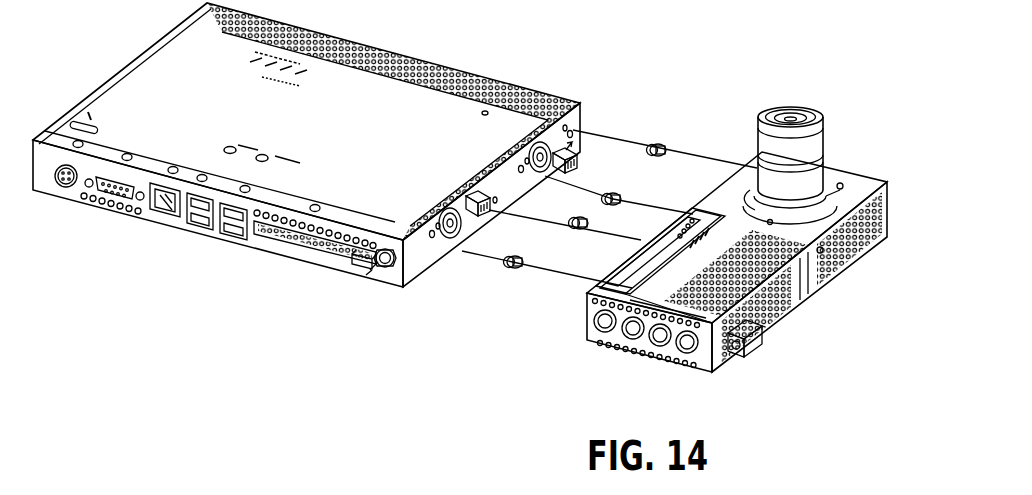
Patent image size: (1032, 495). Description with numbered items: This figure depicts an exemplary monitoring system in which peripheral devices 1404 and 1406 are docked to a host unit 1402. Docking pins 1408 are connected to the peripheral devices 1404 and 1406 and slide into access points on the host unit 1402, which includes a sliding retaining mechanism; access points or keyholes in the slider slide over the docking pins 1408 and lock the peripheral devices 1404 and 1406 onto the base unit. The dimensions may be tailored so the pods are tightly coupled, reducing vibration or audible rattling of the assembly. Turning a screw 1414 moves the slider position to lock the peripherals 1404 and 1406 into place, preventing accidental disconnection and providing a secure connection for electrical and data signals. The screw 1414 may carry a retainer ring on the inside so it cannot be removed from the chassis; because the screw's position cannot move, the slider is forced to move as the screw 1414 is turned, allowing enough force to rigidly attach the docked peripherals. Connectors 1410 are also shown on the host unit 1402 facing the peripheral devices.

The host unit 1402 is at (306, 145).
The peripheral device 1404 is at (756, 239).
The peripheral device 1406 is at (665, 354).
The docking pins 1408 is at (609, 189).
The interface connectors 1410 is at (562, 203).
The screw 1414 is at (414, 293).